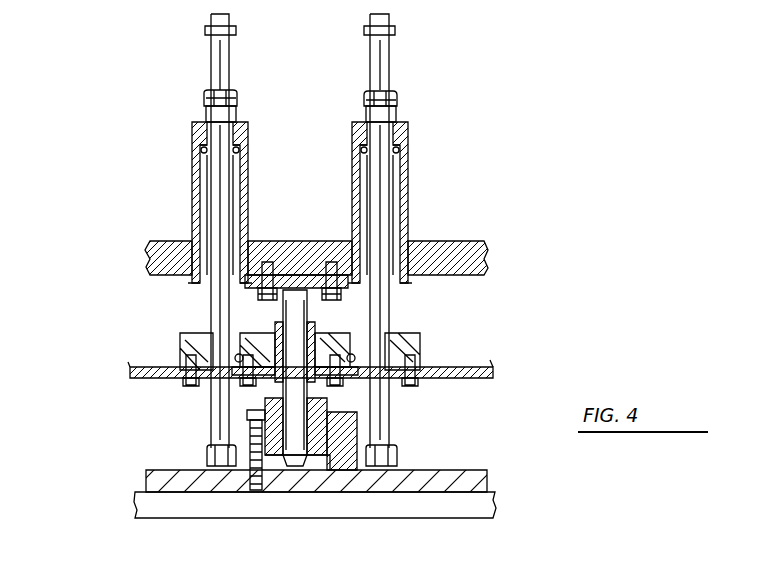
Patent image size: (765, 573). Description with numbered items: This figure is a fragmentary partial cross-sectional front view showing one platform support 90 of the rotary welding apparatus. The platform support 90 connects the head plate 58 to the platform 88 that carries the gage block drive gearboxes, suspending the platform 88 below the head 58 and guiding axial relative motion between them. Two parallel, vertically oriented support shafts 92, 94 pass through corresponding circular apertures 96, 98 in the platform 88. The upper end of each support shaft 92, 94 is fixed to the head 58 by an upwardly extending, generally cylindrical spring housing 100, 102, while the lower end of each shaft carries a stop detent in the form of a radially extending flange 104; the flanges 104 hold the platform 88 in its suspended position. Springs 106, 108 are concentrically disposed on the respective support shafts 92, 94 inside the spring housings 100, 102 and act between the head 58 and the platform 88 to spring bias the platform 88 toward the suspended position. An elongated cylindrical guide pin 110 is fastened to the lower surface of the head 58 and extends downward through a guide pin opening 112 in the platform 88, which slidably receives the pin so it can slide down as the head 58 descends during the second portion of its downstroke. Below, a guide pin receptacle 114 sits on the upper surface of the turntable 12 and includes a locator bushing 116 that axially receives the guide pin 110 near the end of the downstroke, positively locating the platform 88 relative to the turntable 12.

The platform support 90 is at (80, 72).
The turntable 12 is at (490, 492).
The head plate 58 is at (453, 246).
The platform 88 is at (478, 372).
The support shaft 92 is at (215, 386).
The support shaft 94 is at (380, 388).
The circular aperture 96 is at (208, 345).
The circular aperture 98 is at (392, 345).
The spring housing 100 is at (207, 120).
The spring housing 102 is at (405, 125).
The flange 104 is at (212, 452).
The spring 106 is at (200, 178).
The spring 108 is at (405, 170).
The guide pin 110 is at (300, 462).
The guide pin opening 112 is at (313, 326).
The guide pin receptacle 114 is at (330, 465).
The locator bushing 116 is at (262, 468).